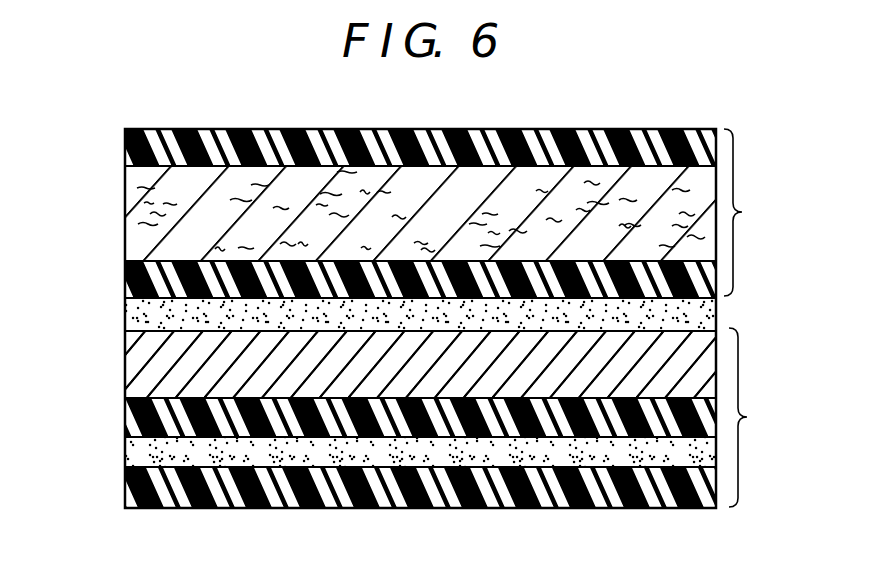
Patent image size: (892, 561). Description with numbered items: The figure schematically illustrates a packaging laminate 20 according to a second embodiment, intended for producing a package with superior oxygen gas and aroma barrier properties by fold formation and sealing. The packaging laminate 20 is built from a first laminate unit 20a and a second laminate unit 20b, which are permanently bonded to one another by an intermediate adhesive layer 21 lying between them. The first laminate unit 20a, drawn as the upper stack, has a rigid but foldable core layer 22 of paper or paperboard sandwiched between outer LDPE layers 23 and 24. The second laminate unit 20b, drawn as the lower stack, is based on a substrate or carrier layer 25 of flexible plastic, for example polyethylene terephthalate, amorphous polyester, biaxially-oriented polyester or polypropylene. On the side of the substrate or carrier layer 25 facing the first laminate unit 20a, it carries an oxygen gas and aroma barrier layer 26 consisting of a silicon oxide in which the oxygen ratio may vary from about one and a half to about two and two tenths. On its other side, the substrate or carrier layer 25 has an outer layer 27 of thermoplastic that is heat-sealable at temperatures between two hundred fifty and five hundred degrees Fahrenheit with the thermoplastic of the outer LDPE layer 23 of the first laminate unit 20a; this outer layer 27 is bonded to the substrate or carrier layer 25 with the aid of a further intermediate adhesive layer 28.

The packaging laminate 20 is at (733, 97).
The first laminate unit 20a is at (767, 212).
The second laminate unit 20b is at (771, 417).
The intermediate adhesive layer 21 is at (125, 316).
The core layer 22 is at (125, 210).
The outer LDPE layer 23 is at (125, 143).
The outer LDPE layer 24 is at (125, 277).
The substrate or carrier layer 25 is at (125, 414).
The oxygen gas and aroma barrier layer 26 is at (125, 362).
The outer layer of thermoplastic 27 is at (125, 487).
The intermediate adhesive layer 28 is at (125, 450).